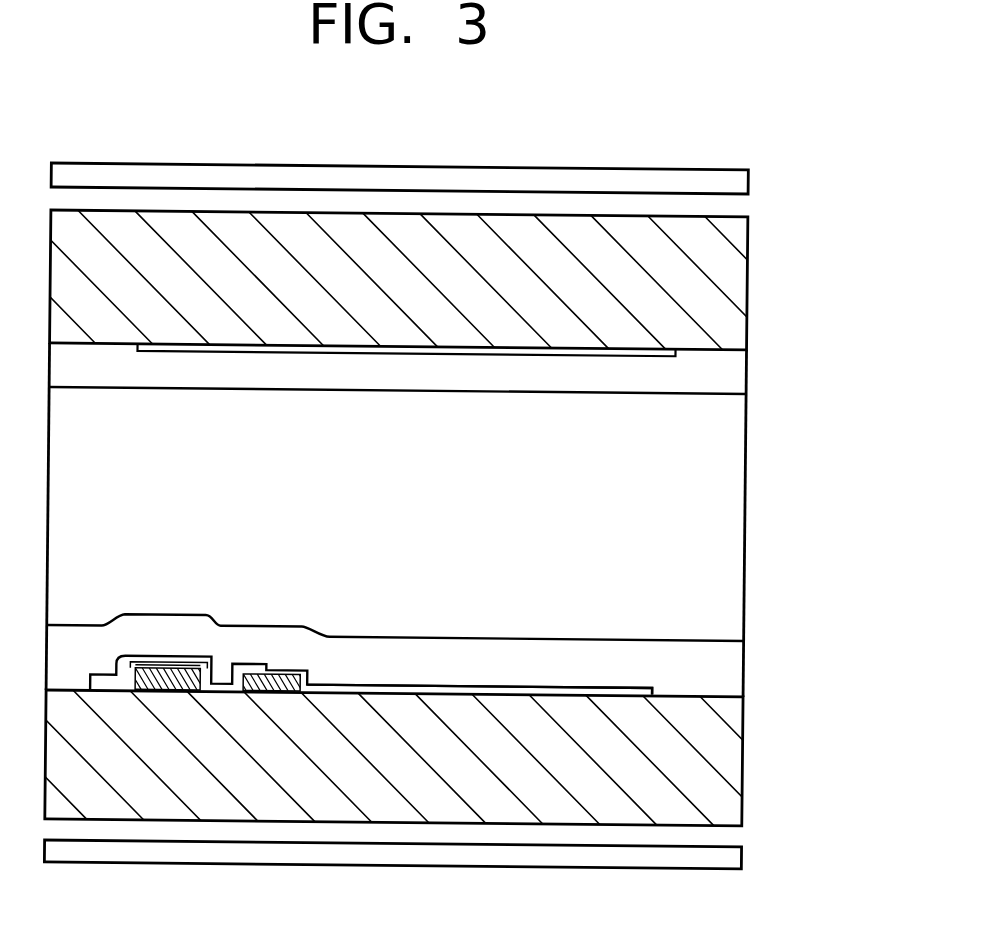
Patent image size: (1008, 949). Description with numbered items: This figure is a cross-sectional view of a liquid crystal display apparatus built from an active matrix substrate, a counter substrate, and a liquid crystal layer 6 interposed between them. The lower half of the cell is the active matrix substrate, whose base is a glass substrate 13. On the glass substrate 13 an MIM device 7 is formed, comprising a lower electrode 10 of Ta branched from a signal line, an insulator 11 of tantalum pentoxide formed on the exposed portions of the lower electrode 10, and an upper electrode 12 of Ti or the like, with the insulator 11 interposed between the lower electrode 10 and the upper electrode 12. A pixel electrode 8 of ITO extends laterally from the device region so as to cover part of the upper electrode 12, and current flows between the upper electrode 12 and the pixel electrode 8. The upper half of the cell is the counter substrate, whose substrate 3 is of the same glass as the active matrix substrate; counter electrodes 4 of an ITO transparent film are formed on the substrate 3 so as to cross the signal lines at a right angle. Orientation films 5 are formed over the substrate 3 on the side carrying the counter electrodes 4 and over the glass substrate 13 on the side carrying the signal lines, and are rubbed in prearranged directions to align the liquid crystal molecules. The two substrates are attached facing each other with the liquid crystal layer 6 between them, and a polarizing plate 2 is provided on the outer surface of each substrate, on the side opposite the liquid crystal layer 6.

The polarizing plate 2 is at (730, 178).
The substrate 3 is at (731, 270).
The counter electrodes 4 is at (656, 354).
The orientation films 5 is at (692, 379).
The liquid crystal layer 6 is at (710, 563).
The MIM device 7 is at (372, 591).
The pixel electrode 8 is at (597, 688).
The lower electrode 10 is at (136, 652).
The insulator 11 is at (173, 654).
The upper electrode 12 is at (253, 627).
The glass substrate 13 is at (716, 766).